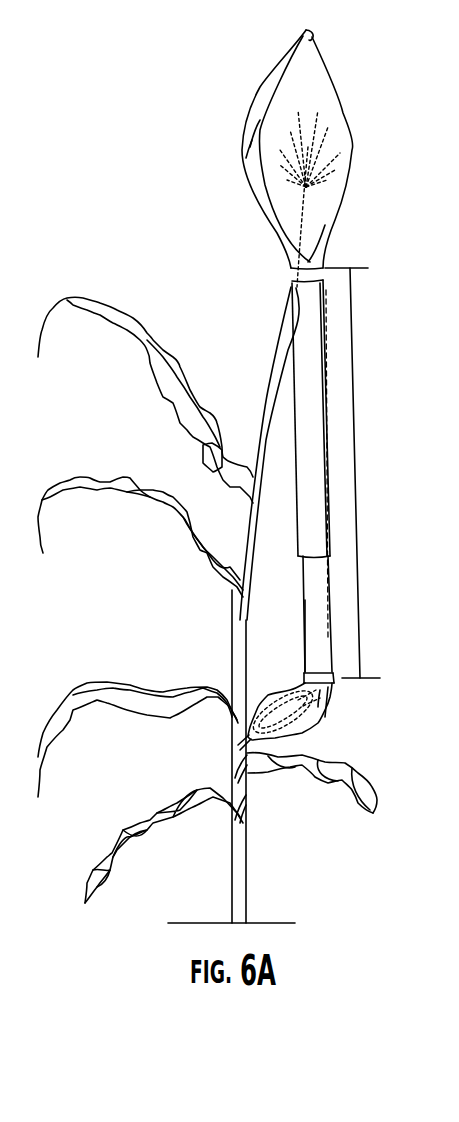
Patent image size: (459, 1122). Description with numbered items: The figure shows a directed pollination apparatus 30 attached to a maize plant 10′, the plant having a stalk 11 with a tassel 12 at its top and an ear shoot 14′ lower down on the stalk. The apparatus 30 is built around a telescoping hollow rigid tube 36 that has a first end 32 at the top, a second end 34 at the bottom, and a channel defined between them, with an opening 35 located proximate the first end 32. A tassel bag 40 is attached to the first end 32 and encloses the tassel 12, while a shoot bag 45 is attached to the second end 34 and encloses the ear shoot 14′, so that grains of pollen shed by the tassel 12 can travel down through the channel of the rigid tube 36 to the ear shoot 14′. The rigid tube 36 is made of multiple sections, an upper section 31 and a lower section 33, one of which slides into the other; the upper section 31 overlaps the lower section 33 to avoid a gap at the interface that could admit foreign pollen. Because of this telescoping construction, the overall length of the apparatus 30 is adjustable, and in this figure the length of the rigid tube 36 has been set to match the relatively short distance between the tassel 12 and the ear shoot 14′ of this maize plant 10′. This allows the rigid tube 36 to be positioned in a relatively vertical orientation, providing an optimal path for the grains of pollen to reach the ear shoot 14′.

The maize plant 10′ is at (163, 293).
The stalk 11 is at (235, 630).
The tassel 12 is at (286, 111).
The ear shoot 14′ is at (282, 696).
The directed pollination apparatus 30 is at (386, 275).
The upper section 31 is at (318, 320).
The first end 32 is at (335, 262).
The lower section 33 is at (333, 620).
The second end 34 is at (352, 686).
The opening 35 is at (276, 291).
The telescoping hollow rigid tube 36 is at (335, 445).
The tassel bag 40 is at (348, 118).
The shoot bag 45 is at (310, 733).